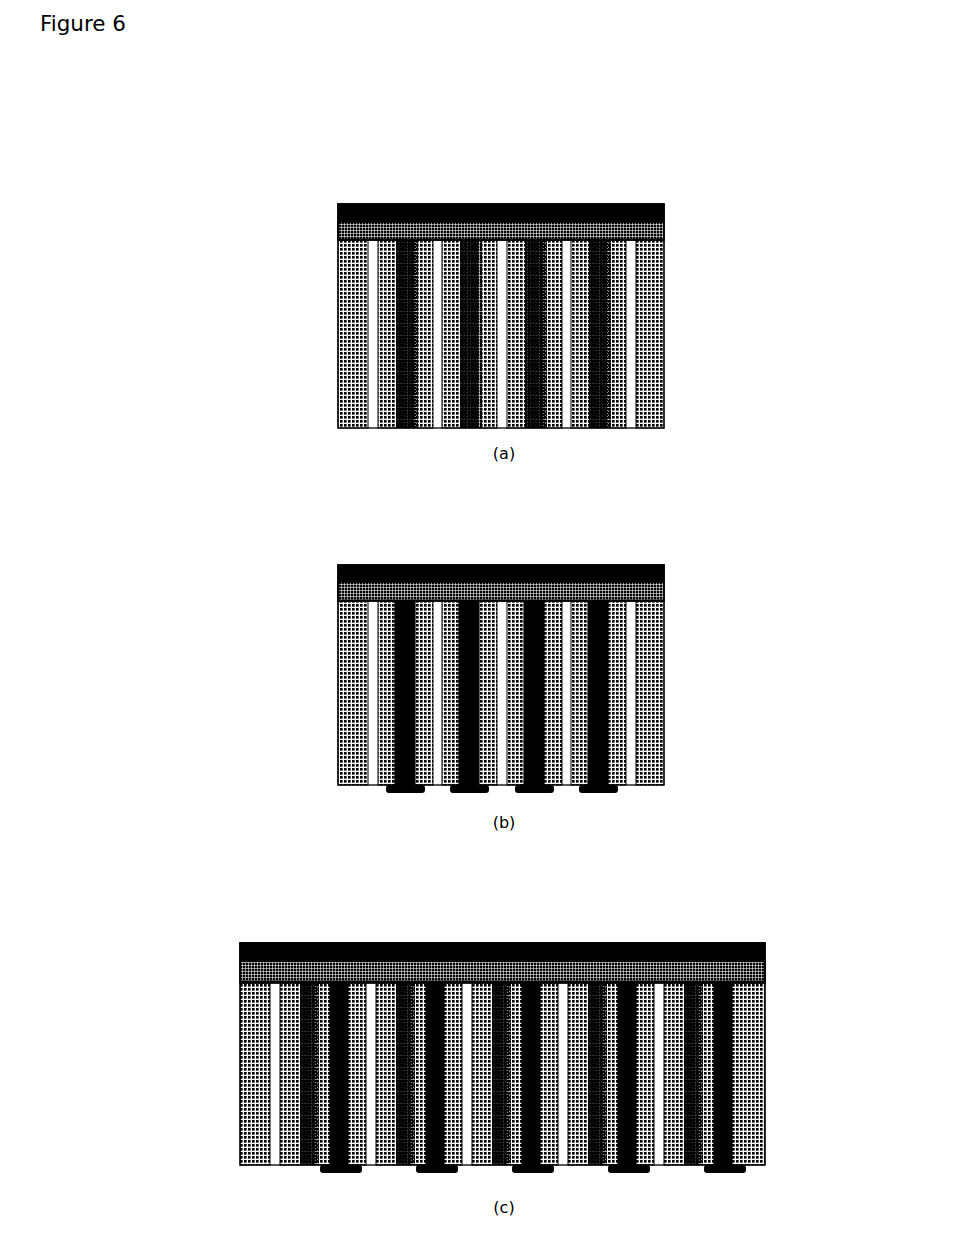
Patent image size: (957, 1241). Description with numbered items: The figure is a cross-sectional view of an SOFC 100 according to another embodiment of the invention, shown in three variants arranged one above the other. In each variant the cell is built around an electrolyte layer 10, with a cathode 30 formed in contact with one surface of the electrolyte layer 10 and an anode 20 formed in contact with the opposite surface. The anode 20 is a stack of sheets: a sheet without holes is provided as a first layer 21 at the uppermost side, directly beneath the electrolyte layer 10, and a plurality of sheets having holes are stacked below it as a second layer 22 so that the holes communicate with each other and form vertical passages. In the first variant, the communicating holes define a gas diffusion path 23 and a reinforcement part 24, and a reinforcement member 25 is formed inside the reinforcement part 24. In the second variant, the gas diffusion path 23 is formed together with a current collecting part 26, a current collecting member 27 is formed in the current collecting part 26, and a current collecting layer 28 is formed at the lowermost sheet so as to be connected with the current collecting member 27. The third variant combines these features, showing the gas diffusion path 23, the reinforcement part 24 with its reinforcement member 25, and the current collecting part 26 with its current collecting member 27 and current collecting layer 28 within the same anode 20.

The SOFC 100 is at (345, 156).
The electrolyte layer 10 is at (337, 225).
The cathode 30 is at (585, 203).
The anode 20 is at (737, 238).
The first layer 21 is at (666, 241).
The second layer 22 is at (669, 425).
The gas diffusion path 23 is at (372, 395).
The reinforcement part 24 is at (405, 302).
The reinforcement member 25 is at (408, 340).
The current collecting part 26 is at (405, 684).
The current collecting member 27 is at (398, 720).
The current collecting layer 28 is at (375, 790).